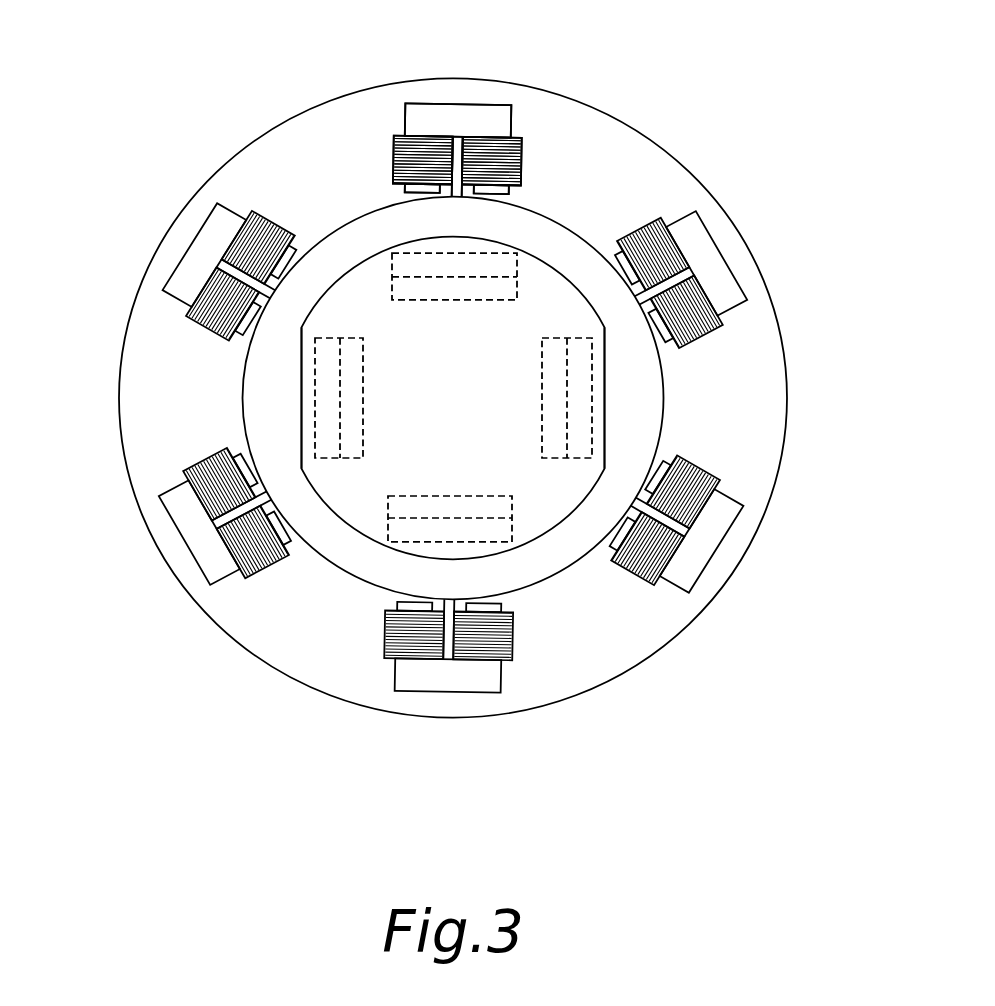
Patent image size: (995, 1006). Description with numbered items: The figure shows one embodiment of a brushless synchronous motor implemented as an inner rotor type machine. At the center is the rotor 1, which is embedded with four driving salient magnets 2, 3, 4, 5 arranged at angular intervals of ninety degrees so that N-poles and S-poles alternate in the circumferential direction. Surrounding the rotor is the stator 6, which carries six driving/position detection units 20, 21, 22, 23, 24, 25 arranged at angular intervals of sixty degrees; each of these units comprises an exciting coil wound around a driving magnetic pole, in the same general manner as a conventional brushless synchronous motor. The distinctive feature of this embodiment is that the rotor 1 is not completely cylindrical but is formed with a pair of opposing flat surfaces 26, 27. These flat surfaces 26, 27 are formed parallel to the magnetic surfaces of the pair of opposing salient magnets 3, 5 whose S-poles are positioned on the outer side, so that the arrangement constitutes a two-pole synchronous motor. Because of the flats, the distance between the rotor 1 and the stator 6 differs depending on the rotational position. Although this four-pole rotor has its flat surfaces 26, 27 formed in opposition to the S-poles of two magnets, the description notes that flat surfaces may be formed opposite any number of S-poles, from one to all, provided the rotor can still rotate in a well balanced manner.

The rotor 1 is at (372, 527).
The driving salient magnet 2 is at (405, 252).
The driving salient magnet 3 is at (590, 408).
The driving salient magnet 4 is at (512, 525).
The driving salient magnet 5 is at (315, 428).
The stator 6 is at (223, 640).
The driving/position detection unit 20 is at (516, 124).
The driving/position detection unit 21 is at (718, 318).
The driving/position detection unit 22 is at (672, 588).
The driving/position detection unit 23 is at (502, 680).
The driving/position detection unit 24 is at (167, 518).
The driving/position detection unit 25 is at (198, 233).
The flat surface 26 is at (607, 377).
The flat surface 27 is at (302, 370).